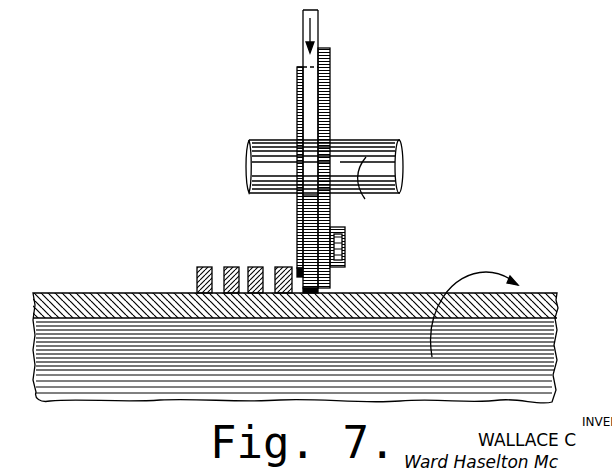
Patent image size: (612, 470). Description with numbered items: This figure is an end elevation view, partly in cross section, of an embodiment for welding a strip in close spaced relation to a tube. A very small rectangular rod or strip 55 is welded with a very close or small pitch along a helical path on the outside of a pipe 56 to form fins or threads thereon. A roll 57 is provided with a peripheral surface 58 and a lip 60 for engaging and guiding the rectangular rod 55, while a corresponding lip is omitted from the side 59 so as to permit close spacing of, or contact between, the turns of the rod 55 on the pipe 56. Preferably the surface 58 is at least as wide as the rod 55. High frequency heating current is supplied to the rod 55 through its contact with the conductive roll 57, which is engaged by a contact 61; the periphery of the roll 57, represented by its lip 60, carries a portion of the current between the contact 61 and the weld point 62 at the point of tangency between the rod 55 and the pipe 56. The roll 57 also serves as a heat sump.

The rectangular rod 55 is at (321, 24).
The pipe 56 is at (128, 292).
The roll 57 is at (297, 107).
The peripheral surface 58 is at (303, 67).
The side 59 is at (292, 266).
The lip 60 is at (331, 276).
The contact 61 is at (346, 245).
The weld point 62 is at (320, 291).